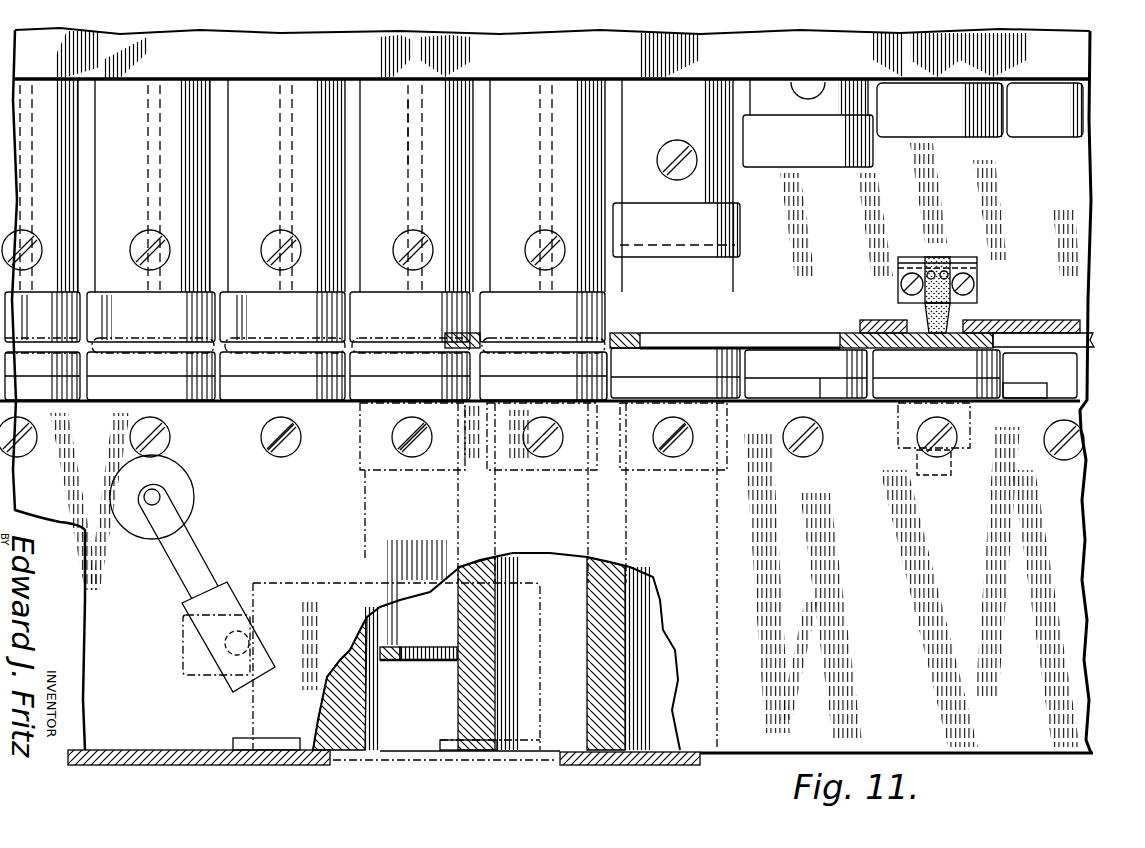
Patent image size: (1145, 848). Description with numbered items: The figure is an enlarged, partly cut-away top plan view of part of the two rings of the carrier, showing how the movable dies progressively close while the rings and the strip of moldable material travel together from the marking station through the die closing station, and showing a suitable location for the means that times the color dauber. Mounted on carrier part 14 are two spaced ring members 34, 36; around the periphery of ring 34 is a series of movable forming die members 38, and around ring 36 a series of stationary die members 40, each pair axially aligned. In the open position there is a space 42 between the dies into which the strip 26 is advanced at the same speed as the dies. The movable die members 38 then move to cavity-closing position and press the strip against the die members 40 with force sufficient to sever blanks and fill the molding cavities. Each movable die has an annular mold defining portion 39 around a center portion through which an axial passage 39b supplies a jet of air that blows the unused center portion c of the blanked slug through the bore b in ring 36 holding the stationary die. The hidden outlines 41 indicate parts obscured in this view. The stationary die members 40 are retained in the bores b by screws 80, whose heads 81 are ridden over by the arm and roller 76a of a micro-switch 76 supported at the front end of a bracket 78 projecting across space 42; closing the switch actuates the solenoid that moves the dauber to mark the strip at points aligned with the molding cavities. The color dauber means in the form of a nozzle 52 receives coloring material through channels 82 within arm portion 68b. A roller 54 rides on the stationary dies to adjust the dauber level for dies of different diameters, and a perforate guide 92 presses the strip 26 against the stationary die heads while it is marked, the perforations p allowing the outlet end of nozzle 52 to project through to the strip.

The carrier part 14 is at (1093, 594).
The ring member 34 is at (328, 38).
The forming die member 38 is at (248, 100).
The annular mold defining portion 39 is at (658, 246).
The axial passage 39b is at (410, 168).
The stationary die member 40 is at (267, 368).
The hidden outline 41 is at (125, 353).
The strip 26 is at (690, 342).
The channels 82 is at (943, 270).
The arm portion 68b is at (978, 266).
The nozzle 52 is at (952, 313).
The perforations p is at (917, 322).
The perforate guide 92 is at (1083, 325).
The roller 54 is at (1030, 388).
The space 42 is at (1062, 177).
The screws 80 is at (284, 449).
The screw heads 81 is at (290, 452).
The bores b is at (453, 452).
The arm and roller 76a is at (198, 552).
The micro-switch 76 is at (252, 718).
The bracket 78 is at (170, 752).
The ring member 36 is at (1048, 750).
The unused center portion c is at (432, 664).